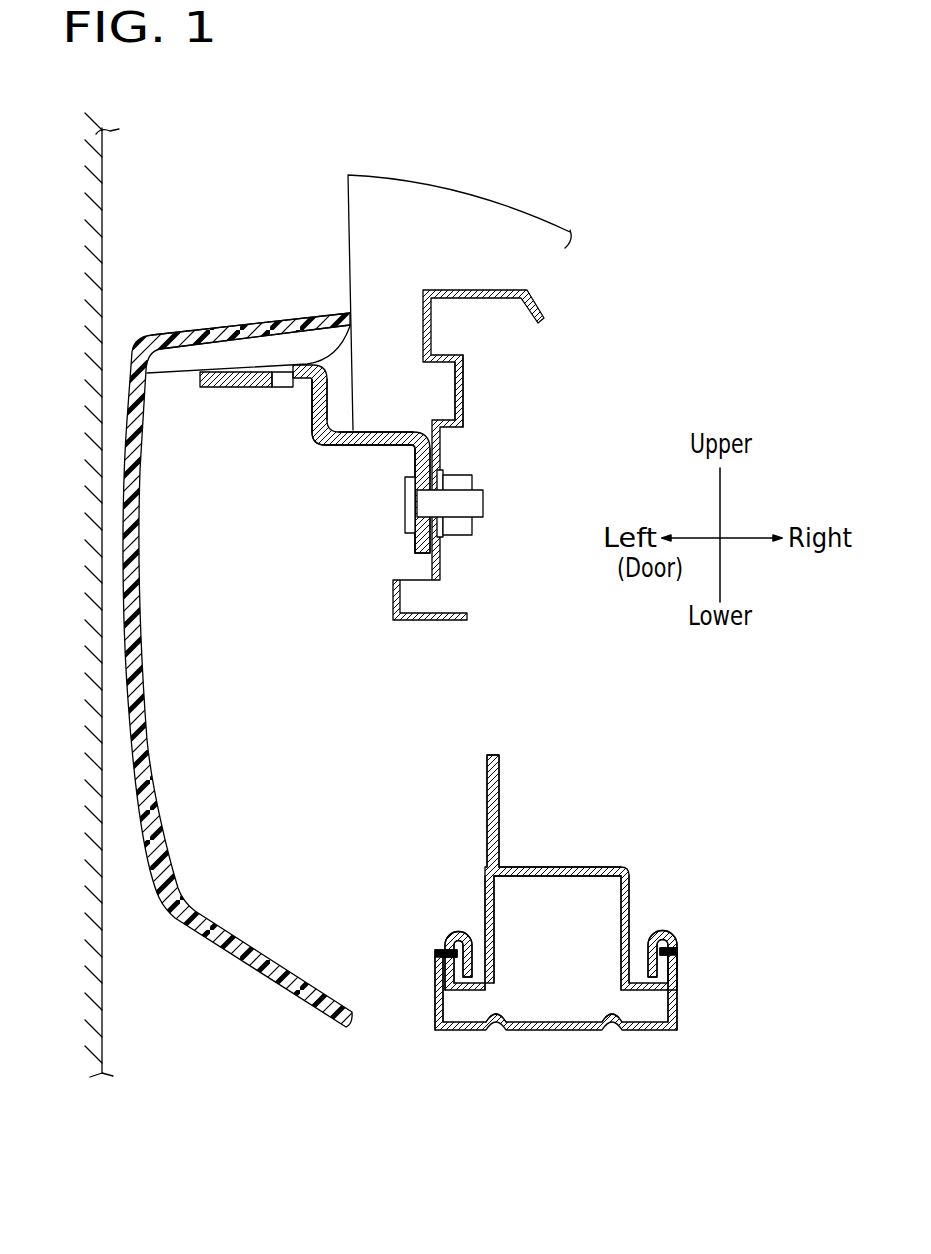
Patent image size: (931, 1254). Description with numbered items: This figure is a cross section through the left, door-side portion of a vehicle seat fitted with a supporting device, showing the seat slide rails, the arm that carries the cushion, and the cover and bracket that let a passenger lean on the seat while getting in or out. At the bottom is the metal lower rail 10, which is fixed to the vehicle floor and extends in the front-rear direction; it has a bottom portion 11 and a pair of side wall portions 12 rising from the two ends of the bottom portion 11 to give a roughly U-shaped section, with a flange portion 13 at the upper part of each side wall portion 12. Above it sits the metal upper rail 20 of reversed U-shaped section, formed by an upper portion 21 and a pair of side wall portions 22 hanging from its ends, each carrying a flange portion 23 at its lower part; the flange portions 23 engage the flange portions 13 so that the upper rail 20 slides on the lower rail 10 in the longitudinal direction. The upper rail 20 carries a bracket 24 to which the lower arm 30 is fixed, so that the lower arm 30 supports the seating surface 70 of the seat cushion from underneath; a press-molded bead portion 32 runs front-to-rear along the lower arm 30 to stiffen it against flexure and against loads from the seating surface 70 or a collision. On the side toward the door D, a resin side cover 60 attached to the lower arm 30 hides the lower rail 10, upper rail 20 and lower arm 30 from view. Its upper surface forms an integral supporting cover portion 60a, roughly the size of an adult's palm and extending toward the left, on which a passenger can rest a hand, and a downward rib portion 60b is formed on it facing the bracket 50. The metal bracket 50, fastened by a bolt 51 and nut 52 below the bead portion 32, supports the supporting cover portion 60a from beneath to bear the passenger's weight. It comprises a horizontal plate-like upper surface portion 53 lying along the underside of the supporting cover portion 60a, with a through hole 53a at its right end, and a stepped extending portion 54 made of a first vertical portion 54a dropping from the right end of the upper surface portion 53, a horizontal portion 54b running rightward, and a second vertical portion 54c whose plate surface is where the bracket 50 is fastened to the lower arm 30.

The door D is at (103, 173).
The lower rail 10 is at (551, 986).
The bottom portion 11 is at (510, 1032).
The side wall portion 12 is at (435, 1012).
The flange portion 13 is at (462, 948).
The upper rail 20 is at (561, 872).
The upper portion 21 is at (549, 866).
The side wall portion 22 is at (486, 890).
The flange portion 23 is at (440, 953).
The bracket 24 is at (487, 800).
The lower arm 30 is at (509, 448).
The bead portion 32 is at (465, 390).
The bracket 50 is at (309, 341).
The bolt 51 is at (402, 515).
The nut 52 is at (473, 534).
The upper surface portion 53 is at (260, 351).
The through hole 53a is at (276, 372).
The extending portion 54 is at (309, 471).
The first vertical portion 54a is at (313, 418).
The horizontal portion 54b is at (400, 435).
The second vertical portion 54c is at (413, 470).
The side cover 60 is at (191, 623).
The supporting cover portion 60a is at (240, 325).
The rib portion 60b is at (205, 352).
The seating surface 70 is at (478, 198).